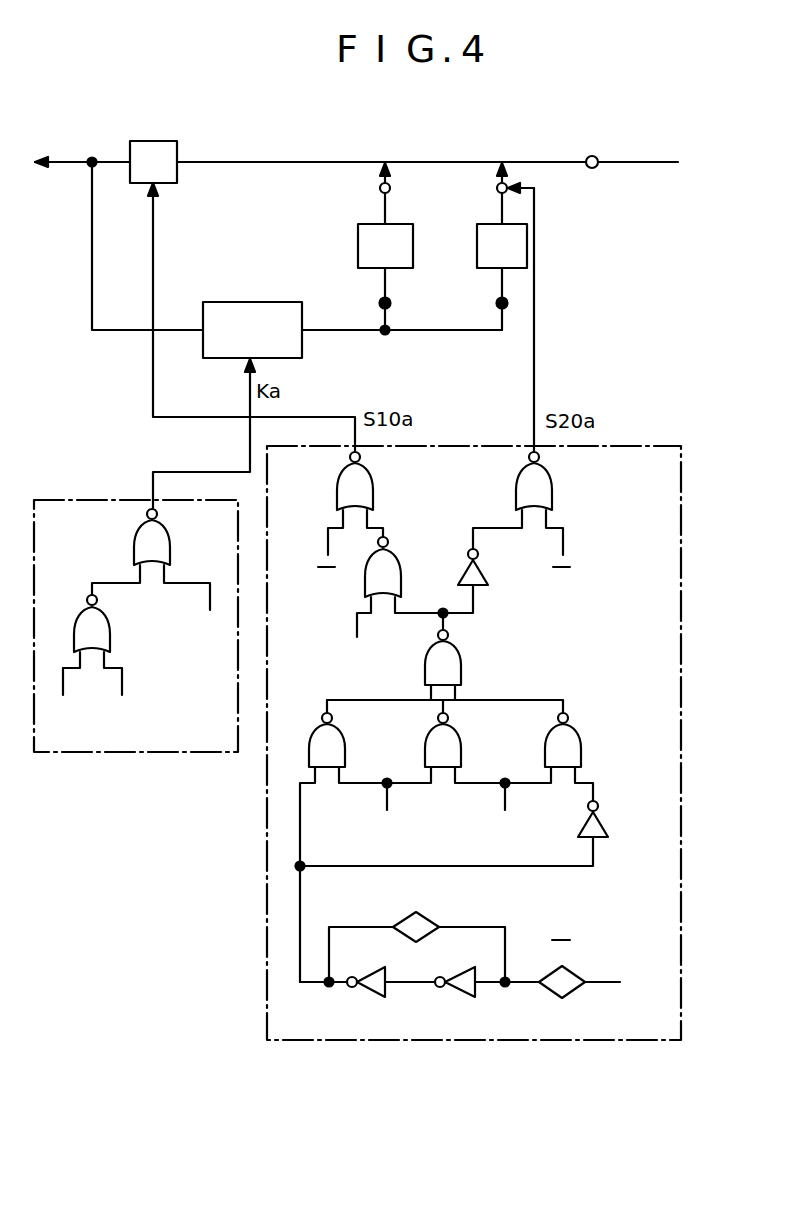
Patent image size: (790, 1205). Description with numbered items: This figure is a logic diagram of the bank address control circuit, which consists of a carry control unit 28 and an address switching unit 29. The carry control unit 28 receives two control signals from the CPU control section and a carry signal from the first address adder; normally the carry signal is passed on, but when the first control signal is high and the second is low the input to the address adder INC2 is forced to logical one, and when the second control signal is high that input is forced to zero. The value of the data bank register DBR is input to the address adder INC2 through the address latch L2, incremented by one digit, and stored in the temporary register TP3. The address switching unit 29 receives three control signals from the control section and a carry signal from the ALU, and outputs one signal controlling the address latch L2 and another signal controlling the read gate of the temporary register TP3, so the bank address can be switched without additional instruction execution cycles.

The carry control unit 28 is at (118, 752).
The address switching unit 29 is at (430, 1040).
The address latch L2 is at (153, 162).
The address adder INC2 is at (252, 330).
The data bank register DBR is at (385, 246).
The temporary register TP3 is at (502, 246).